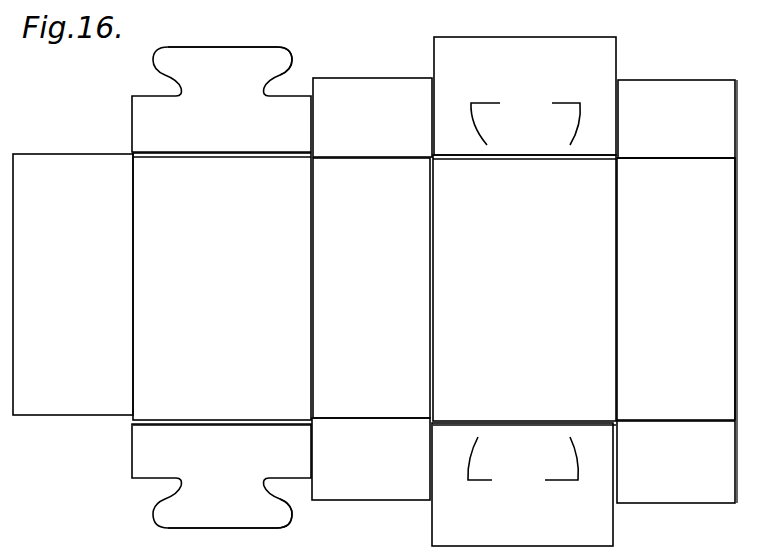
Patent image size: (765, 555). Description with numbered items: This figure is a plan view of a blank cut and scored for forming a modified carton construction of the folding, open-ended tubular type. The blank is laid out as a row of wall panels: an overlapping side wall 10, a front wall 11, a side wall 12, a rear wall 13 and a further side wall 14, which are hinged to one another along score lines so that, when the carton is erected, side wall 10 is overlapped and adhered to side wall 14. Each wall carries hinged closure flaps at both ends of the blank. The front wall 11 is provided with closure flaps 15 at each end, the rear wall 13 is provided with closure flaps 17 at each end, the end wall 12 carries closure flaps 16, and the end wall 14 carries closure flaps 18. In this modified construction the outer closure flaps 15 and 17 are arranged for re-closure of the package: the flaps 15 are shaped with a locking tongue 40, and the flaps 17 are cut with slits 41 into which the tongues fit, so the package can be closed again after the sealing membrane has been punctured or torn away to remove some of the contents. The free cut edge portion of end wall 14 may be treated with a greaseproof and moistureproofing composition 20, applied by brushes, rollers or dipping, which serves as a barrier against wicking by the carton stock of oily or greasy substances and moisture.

The side wall 10 is at (55, 296).
The front wall 11 is at (210, 308).
The side wall 12 is at (360, 313).
The rear wall 13 is at (508, 313).
The side wall 14 is at (660, 311).
The closure flaps 15 is at (206, 141).
The closure flaps 16 is at (356, 143).
The closure flaps 17 is at (516, 81).
The closure flaps 18 is at (658, 129).
The greaseproof and moistureproofing composition 20 is at (732, 333).
The locking tongue 40 is at (262, 62).
The slits 41 is at (475, 135).